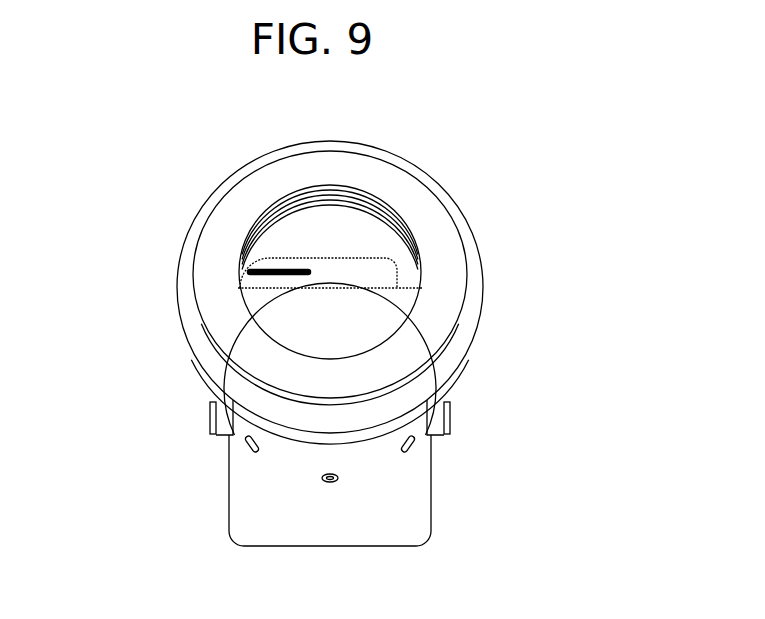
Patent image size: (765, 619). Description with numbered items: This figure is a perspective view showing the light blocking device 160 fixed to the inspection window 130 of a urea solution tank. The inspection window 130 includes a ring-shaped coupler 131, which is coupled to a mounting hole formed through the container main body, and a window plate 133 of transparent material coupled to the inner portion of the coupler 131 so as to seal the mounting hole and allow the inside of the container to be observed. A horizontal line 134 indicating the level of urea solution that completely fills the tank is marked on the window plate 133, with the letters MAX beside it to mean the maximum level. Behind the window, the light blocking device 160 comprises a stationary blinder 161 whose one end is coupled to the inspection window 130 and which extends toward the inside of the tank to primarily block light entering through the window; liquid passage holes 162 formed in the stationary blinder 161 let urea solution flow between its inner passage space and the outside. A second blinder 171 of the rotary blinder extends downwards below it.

The inspection window 130 is at (166, 333).
The ring-shaped coupler 131 is at (466, 268).
The window plate 133 is at (338, 222).
The horizontal line 134 is at (247, 266).
The light blocking device 160 is at (367, 440).
The stationary blinder 161 is at (275, 465).
The liquid passage holes 162 is at (333, 482).
The second blinder 171 is at (431, 510).